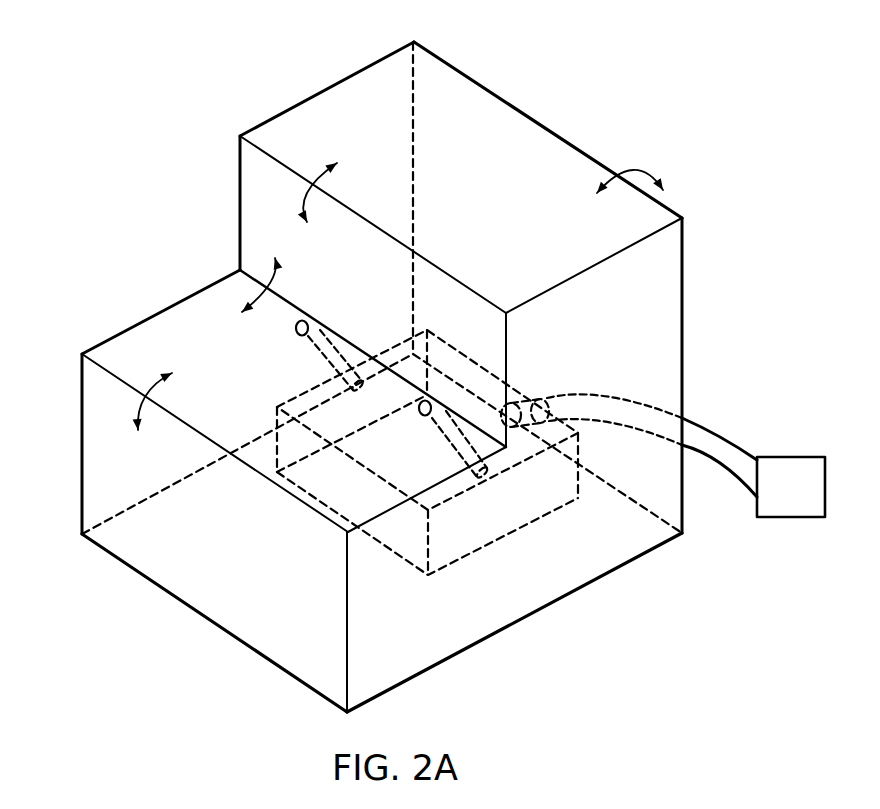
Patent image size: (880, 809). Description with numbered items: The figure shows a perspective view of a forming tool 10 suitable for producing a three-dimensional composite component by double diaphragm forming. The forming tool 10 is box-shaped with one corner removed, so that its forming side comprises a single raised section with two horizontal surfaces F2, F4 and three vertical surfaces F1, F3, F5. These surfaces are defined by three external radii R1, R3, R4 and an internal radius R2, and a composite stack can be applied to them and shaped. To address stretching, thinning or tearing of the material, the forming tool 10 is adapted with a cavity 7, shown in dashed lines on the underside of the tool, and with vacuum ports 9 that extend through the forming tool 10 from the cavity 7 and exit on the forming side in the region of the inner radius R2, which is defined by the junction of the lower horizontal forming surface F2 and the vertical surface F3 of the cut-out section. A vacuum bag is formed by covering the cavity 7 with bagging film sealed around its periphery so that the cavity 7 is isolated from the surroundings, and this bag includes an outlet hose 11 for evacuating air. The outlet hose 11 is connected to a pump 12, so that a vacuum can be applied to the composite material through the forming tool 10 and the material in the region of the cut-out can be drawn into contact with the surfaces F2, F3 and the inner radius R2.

The cavity 7 is at (513, 532).
The vacuum ports 9 is at (307, 348).
The forming tool 10 is at (592, 93).
The outlet hose 11 is at (545, 398).
The pump 12 is at (790, 457).
The vertical surface F1 is at (95, 440).
The lower horizontal forming surface F2 is at (115, 352).
The vertical surface F3 is at (253, 192).
The horizontal surface F4 is at (302, 117).
The vertical surface F5 is at (668, 320).
The external radius R1 is at (162, 414).
The internal radius R2 is at (283, 285).
The external radius R3 is at (339, 192).
The external radius R4 is at (637, 163).